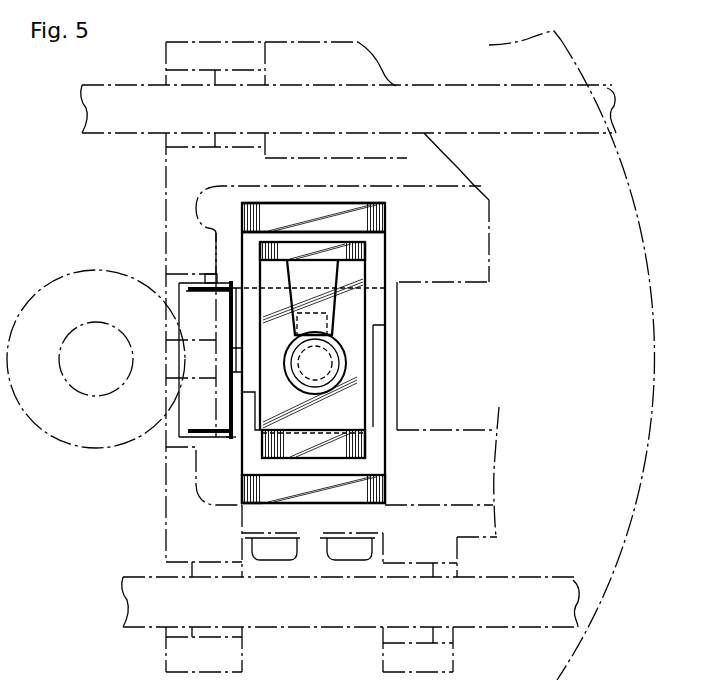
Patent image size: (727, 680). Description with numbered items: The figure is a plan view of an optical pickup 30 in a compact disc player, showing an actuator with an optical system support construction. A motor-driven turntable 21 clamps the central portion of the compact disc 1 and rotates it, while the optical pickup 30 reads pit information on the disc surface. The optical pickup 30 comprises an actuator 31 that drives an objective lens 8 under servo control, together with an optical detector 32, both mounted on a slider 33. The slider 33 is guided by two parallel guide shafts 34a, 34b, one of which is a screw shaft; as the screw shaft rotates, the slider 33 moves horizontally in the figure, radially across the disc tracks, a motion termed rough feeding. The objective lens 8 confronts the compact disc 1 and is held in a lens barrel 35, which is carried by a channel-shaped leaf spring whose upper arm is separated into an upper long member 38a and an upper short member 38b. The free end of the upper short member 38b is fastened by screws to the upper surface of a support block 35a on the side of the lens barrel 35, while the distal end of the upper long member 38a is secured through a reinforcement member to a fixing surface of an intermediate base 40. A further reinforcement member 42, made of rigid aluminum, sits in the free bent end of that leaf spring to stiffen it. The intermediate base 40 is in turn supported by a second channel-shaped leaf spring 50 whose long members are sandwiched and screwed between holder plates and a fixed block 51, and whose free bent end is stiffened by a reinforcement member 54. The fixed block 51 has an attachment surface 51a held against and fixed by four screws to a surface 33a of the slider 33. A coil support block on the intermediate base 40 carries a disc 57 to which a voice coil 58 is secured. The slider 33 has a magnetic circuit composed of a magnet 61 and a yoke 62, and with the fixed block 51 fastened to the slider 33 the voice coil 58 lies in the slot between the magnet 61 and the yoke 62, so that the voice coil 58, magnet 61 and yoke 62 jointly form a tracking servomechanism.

The compact disc 1 is at (627, 222).
The objective lens 8 is at (320, 363).
The turntable 21 is at (53, 430).
The optical pickup 30 is at (506, 390).
The actuator 31 is at (381, 248).
The optical detector 32 is at (478, 355).
The slider 33 is at (177, 480).
The surface of the slider 33a is at (413, 503).
The guide shaft 34a is at (467, 92).
The guide shaft 34b is at (489, 616).
The lens barrel 35 is at (330, 388).
The support block 35a is at (330, 327).
The upper long member 38a is at (353, 306).
The upper short member 38b is at (325, 307).
The intermediate base 40 is at (373, 425).
The reinforcement member 42 is at (382, 244).
The leaf spring 50 is at (384, 272).
The fixed block 51 is at (377, 497).
The attachment surface 51a is at (260, 506).
The reinforcement member 54 is at (390, 204).
The disc 57 is at (230, 440).
The voice coil 58 is at (205, 278).
The magnet 61 is at (182, 416).
The yoke 62 is at (183, 282).